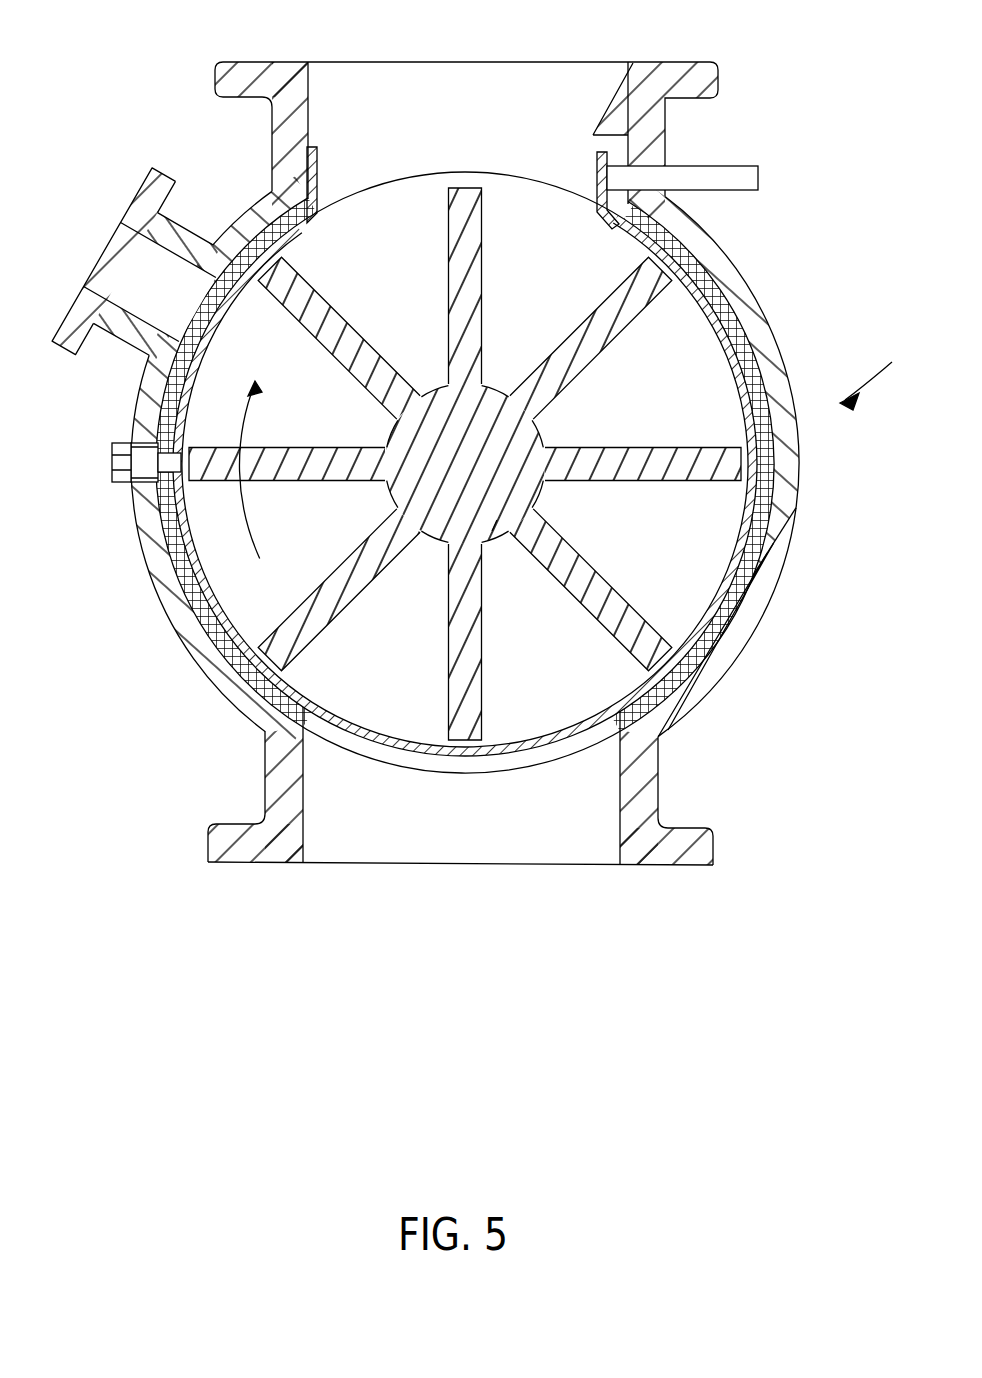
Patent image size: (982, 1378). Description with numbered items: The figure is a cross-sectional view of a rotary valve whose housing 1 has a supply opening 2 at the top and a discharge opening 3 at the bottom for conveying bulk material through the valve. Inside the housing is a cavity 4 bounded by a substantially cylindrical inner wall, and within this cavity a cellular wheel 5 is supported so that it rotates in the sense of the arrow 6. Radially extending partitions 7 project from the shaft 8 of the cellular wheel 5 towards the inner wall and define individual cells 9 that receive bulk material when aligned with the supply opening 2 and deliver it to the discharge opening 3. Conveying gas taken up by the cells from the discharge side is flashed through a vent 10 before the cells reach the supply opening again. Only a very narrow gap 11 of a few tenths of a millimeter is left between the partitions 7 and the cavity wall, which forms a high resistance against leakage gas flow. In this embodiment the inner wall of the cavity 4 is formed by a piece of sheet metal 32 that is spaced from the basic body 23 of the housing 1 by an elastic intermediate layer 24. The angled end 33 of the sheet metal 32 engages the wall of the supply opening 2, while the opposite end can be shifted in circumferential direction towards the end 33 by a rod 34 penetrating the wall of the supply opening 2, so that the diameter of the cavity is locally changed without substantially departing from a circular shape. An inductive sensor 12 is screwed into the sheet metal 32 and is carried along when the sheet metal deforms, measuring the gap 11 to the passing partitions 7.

The housing 1 is at (875, 376).
The supply opening 2 is at (522, 82).
The discharge opening 3 is at (568, 866).
The cavity 4 is at (484, 465).
The cellular wheel 5 is at (543, 430).
The arrow 6 is at (253, 523).
The partitions 7 is at (487, 274).
The shaft 8 is at (497, 523).
The cells 9 is at (401, 270).
The vent 10 is at (115, 262).
The gap 11 is at (260, 656).
The inductive sensor 12 is at (112, 460).
The basic body 23 is at (748, 303).
The elastic intermediate layer 24 is at (690, 258).
The sheet metal 32 is at (732, 592).
The angled end 33 is at (318, 173).
The rod 34 is at (737, 173).